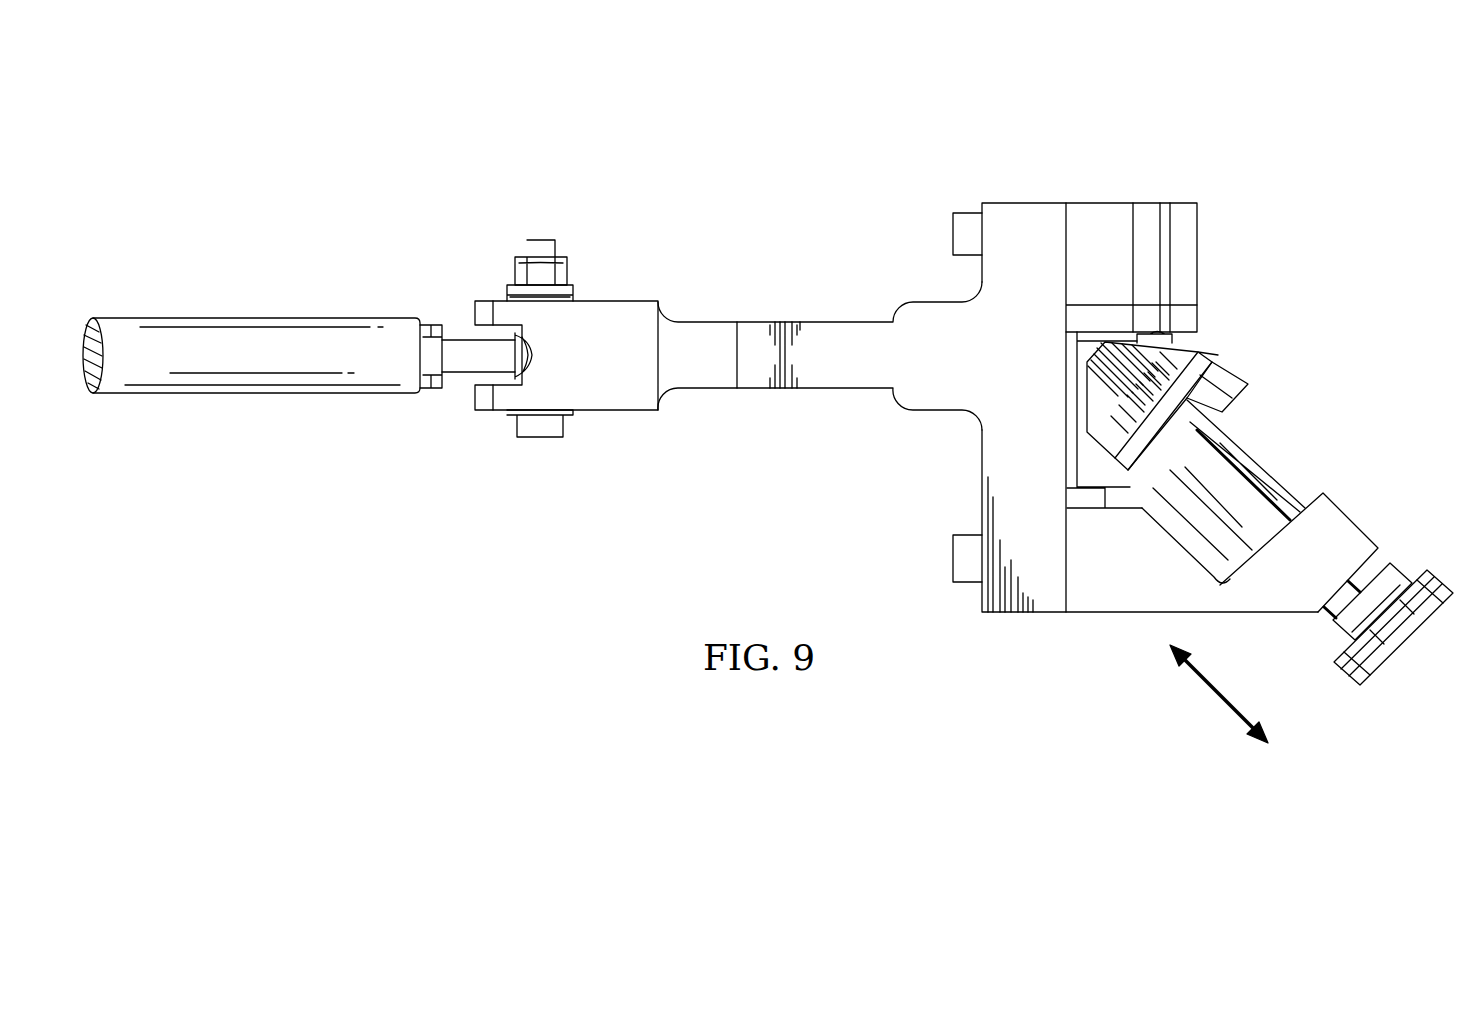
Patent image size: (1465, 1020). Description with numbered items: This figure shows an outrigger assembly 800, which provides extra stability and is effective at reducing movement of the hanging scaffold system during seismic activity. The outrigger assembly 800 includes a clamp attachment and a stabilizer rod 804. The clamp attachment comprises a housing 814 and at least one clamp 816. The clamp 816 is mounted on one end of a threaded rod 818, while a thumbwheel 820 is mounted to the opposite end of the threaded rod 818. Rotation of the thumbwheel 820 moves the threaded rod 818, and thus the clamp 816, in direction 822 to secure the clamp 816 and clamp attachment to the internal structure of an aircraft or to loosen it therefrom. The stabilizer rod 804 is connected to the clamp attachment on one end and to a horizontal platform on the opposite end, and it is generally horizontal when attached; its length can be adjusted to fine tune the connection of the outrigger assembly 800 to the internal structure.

The outrigger assembly 800 is at (388, 85).
The stabilizer rod 804 is at (265, 318).
The housing 814 is at (718, 322).
The clamp 816 is at (1088, 395).
The threaded rod 818 is at (1282, 480).
The thumbwheel 820 is at (1447, 577).
The direction 822 is at (1215, 698).